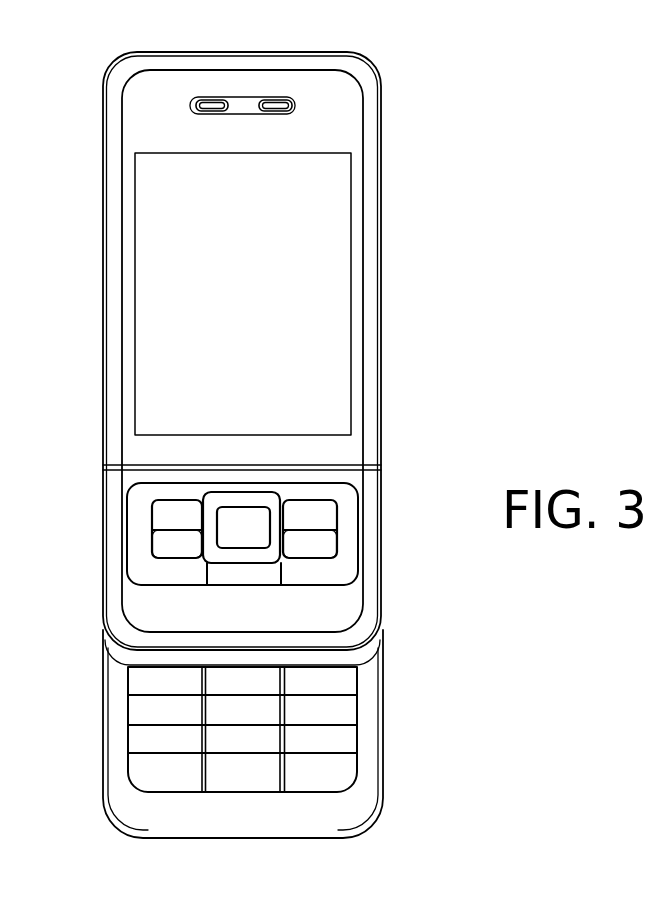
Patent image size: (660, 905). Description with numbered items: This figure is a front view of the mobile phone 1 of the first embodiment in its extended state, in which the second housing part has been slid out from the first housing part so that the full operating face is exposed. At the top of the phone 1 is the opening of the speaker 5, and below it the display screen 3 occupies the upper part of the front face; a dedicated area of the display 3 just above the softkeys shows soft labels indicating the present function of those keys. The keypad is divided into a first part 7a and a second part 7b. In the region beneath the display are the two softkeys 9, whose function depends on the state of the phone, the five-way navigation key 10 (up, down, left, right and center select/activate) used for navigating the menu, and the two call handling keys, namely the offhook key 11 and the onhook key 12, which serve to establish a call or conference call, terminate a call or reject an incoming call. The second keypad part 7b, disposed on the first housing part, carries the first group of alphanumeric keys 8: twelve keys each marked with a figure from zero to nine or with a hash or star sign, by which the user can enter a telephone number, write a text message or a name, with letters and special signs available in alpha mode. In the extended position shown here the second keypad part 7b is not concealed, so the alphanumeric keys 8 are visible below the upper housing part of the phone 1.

The mobile phone 1 is at (407, 80).
The display screen 3 is at (342, 220).
The speaker 5 is at (243, 103).
The first part of the keypad 7a is at (343, 530).
The second part of the keypad 7b is at (363, 737).
The alphanumeric keys 8 is at (252, 773).
The softkeys 9 is at (165, 518).
The navigation key 10 is at (242, 523).
The offhook key 11 is at (167, 542).
The onhook key 12 is at (313, 547).